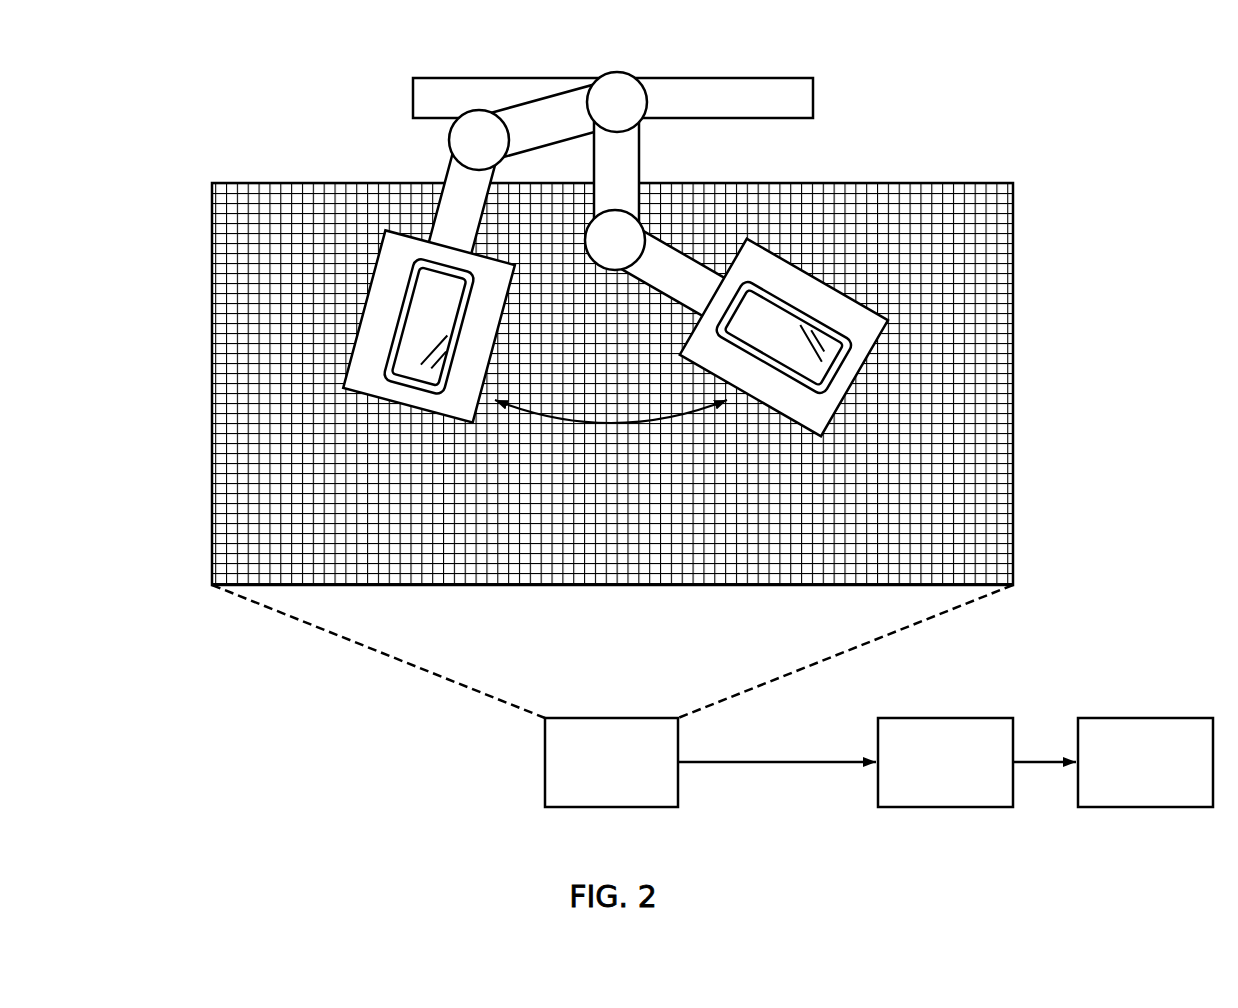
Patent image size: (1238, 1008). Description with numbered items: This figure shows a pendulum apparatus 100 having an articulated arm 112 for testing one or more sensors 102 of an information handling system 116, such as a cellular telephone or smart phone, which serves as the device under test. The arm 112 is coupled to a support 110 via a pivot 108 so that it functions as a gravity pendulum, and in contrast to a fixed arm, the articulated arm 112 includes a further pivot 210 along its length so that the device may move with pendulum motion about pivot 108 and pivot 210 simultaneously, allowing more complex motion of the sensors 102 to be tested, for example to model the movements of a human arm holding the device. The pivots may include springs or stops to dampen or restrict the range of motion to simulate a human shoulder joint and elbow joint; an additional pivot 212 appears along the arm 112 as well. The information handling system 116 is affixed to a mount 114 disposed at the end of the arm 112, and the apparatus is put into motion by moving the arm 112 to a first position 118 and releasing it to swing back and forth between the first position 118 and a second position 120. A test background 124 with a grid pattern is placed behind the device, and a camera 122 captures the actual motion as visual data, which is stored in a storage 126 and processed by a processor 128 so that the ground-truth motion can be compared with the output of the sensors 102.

The pendulum apparatus 100 is at (1110, 106).
The sensors 102 is at (383, 371).
The pivot 108 is at (621, 70).
The support 110 is at (815, 86).
The arm 112 is at (442, 190).
The mount 114 is at (350, 361).
The information handling system 116 is at (405, 283).
The first position 118 is at (422, 540).
The second position 120 is at (752, 540).
The camera 122 is at (545, 785).
The test background 124 is at (1013, 285).
The storage 126 is at (978, 718).
The processor 128 is at (1178, 718).
The pivot 210 is at (449, 136).
The robot arm joint 212 is at (641, 229).